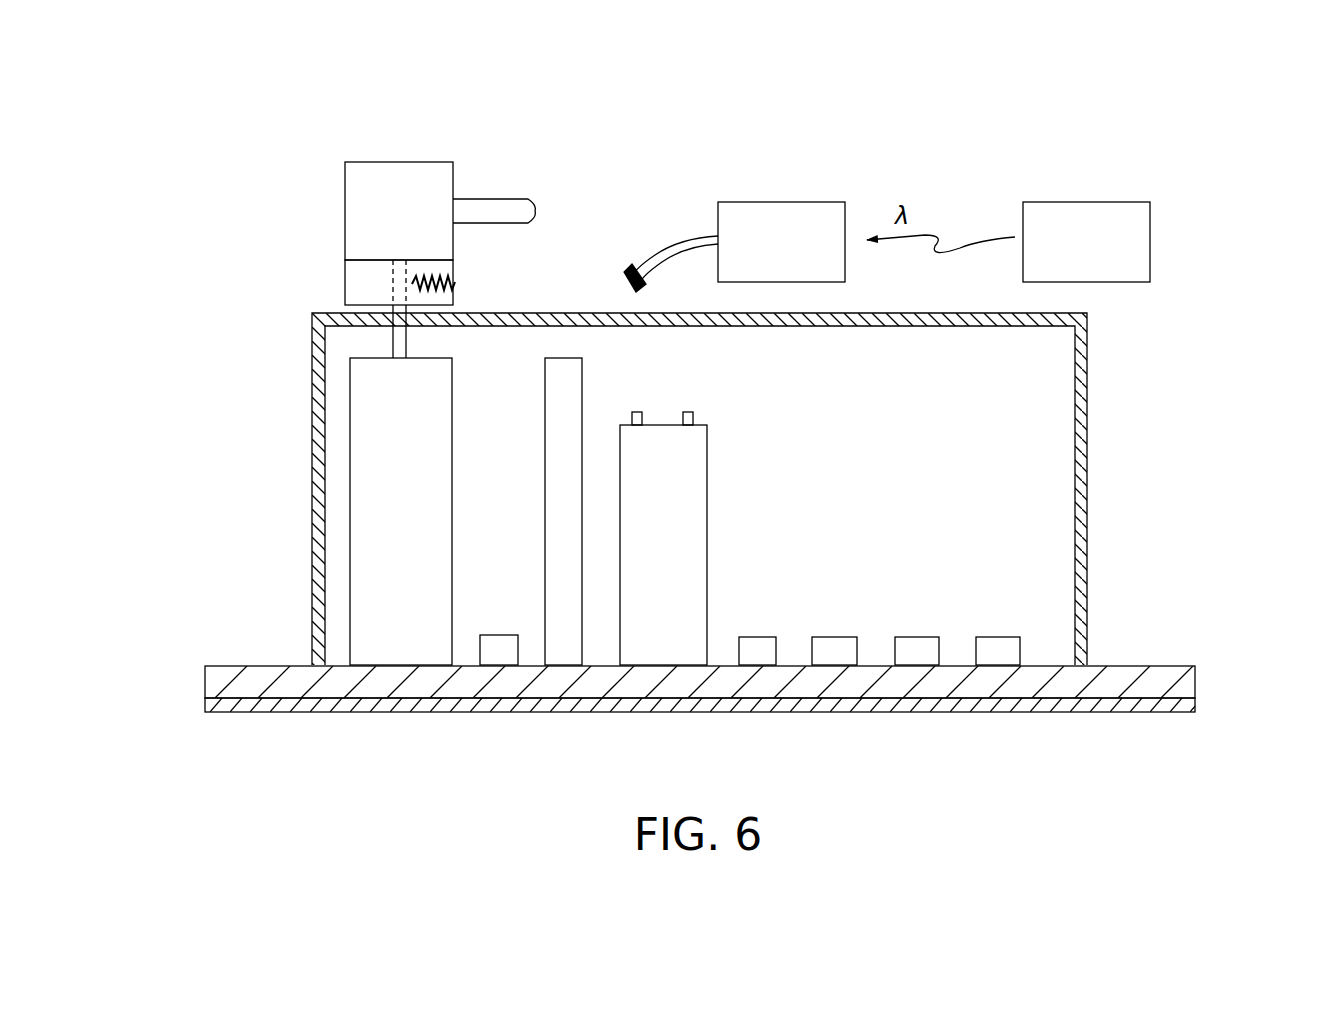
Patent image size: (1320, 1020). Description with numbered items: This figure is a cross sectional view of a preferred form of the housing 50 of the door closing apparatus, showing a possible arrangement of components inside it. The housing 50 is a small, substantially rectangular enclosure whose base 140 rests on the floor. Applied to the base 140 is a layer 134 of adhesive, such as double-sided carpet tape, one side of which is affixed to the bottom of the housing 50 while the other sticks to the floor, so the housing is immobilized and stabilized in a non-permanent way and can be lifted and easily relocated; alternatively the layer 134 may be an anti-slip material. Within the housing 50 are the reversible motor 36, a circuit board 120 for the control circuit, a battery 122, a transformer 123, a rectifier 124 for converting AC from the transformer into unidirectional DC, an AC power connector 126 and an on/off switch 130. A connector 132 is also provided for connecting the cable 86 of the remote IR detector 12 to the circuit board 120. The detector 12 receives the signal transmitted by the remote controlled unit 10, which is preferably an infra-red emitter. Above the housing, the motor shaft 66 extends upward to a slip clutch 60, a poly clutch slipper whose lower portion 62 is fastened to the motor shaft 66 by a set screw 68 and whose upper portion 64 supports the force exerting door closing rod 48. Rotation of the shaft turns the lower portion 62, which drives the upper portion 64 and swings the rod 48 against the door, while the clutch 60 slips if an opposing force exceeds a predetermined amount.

The remote controlled unit 10 is at (1137, 204).
The infra-red detector 12 is at (836, 204).
The reversible motor 36 is at (375, 525).
The door closing rod actuator 48 is at (497, 200).
The housing 50 is at (300, 429).
The slip clutch 60 is at (383, 204).
The lower portion 62 is at (345, 283).
The upper portion 64 is at (345, 207).
The motor shaft 66 is at (408, 340).
The set screw 68 is at (456, 283).
The cable 86 is at (672, 245).
The circuit board 120 is at (582, 362).
The battery 122 is at (707, 496).
The transformer 123 is at (835, 650).
The rectifier 124 is at (758, 648).
The AC power connector 126 is at (915, 650).
The on/off switch 130 is at (995, 650).
The connector 132 is at (495, 650).
The layer of adhesive 134 is at (333, 712).
The base 140 is at (1183, 683).